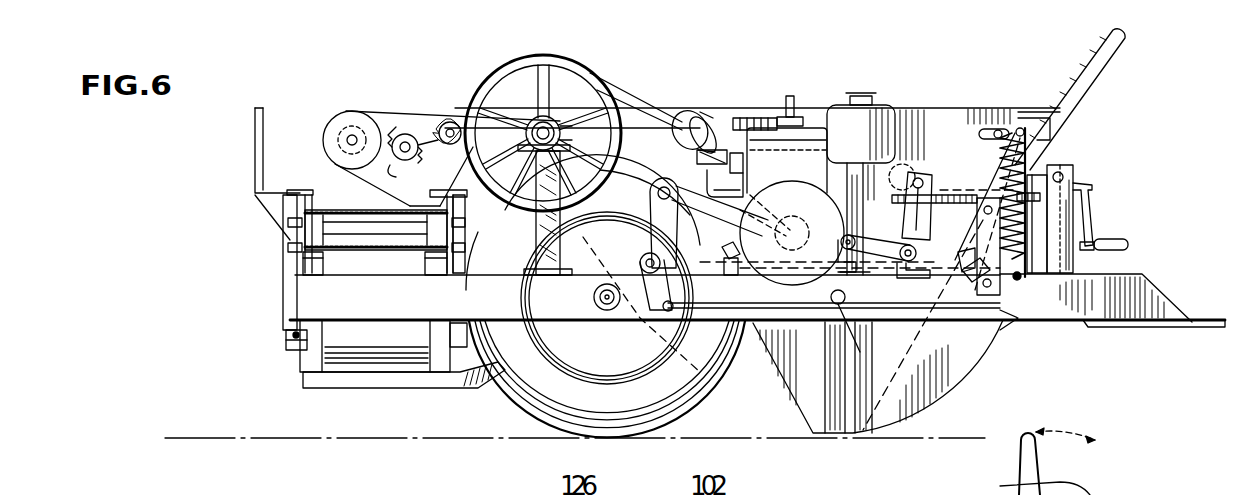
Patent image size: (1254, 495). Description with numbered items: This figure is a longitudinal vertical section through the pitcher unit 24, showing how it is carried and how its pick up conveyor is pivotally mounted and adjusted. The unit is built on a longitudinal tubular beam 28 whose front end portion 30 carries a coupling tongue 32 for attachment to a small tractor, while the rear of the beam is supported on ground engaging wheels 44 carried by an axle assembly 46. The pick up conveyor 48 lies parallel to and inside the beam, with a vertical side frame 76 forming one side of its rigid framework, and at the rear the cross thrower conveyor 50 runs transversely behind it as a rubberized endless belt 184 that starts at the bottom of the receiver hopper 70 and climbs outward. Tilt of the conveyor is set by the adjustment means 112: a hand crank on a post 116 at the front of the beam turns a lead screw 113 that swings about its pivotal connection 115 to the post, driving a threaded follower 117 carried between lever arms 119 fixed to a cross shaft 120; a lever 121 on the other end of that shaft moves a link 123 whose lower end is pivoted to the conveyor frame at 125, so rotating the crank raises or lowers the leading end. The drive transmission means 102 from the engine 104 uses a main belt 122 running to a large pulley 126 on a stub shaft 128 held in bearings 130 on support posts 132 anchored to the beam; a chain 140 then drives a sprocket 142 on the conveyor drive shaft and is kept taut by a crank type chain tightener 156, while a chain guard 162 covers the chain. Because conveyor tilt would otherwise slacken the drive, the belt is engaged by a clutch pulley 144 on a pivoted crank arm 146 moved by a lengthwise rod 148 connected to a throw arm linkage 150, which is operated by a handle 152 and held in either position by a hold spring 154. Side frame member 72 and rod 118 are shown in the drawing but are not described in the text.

The pitcher unit 24 is at (1098, 165).
The longitudinal tubular beam 28 is at (1008, 323).
The front end portion 30 is at (1047, 324).
The coupling tongue 32 is at (1208, 329).
The ground engaging wheels 44 is at (520, 394).
The axle assembly 46 is at (604, 283).
The pick up conveyor 48 is at (955, 390).
The cross thrower conveyor 50 is at (315, 240).
The receiver hopper 70 is at (250, 157).
The frame side member 72 is at (283, 293).
The vertical side frame 76 is at (912, 115).
The drive transmission means 102 is at (674, 100).
The engine 104 is at (765, 150).
The adjustment means 112 is at (1100, 211).
The lead screw 113 is at (948, 190).
The pivotal connection 115 is at (1062, 168).
The post 116 is at (1065, 260).
The threaded follower 117 is at (914, 186).
The connecting rod 118 is at (905, 323).
The lever arms 119 is at (900, 232).
The cross shaft 120 is at (932, 250).
The lever 121 is at (828, 233).
The main belt 122 is at (628, 98).
The link 123 is at (880, 262).
The pivot connection of link to conveyor frame 125 is at (836, 300).
The large pulley 126 is at (527, 72).
The stub shaft 128 is at (554, 118).
The bearings 130 is at (582, 138).
The support posts 132 is at (537, 232).
The chain 140 is at (400, 135).
The sprocket 142 is at (335, 126).
The clutch pulley 144 is at (666, 185).
The crank arm 146 is at (662, 268).
The rod 148 is at (730, 314).
The throw arm linkage 150 is at (1004, 296).
The handle 152 is at (1096, 72).
The hold spring 154 is at (1028, 170).
The chain tightener 156 is at (442, 124).
The chain guard 162 is at (1016, 125).
The endless belt 184 is at (378, 258).